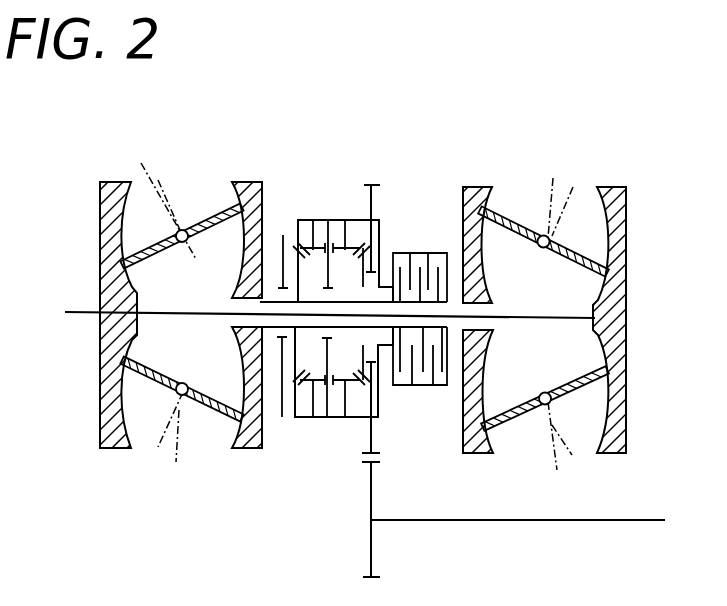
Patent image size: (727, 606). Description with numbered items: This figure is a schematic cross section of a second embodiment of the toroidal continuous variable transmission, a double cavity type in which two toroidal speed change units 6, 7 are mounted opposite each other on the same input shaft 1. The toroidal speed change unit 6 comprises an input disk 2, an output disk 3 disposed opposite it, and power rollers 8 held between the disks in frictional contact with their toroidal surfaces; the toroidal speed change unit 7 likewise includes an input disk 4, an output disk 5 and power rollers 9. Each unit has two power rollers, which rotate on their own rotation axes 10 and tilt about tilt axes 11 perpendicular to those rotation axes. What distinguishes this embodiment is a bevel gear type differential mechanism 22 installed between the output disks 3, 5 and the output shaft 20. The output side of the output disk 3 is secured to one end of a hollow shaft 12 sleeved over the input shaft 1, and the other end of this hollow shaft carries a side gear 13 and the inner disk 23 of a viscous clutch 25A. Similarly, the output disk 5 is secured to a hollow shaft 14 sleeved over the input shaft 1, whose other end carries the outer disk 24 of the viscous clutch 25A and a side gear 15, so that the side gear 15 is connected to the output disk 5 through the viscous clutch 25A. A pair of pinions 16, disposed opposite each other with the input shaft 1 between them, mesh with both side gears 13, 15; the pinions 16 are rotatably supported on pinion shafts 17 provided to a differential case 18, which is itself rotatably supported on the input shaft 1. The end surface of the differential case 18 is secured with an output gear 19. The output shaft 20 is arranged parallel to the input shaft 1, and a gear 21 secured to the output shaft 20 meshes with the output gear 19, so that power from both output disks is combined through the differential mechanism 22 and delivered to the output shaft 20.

The input shaft 1 is at (93, 312).
The input disk 2 is at (100, 220).
The output disk 3 is at (265, 198).
The input disk 4 is at (628, 232).
The output disk 5 is at (462, 190).
The toroidal speed change unit 6 is at (187, 170).
The toroidal speed change unit 7 is at (527, 168).
The power rollers 8 is at (212, 220).
The power rollers 9 is at (510, 223).
The rotation axes 10 is at (355, 321).
The tilt axes 11 is at (181, 243).
The hollow shaft 12 is at (378, 300).
The side gear 13 is at (283, 235).
The hollow shaft 14 is at (480, 282).
The side gear 15 is at (345, 222).
The pinions 16 is at (312, 212).
The pinion shafts 17 is at (333, 212).
The differential case 18 is at (317, 212).
The output gear 19 is at (377, 185).
The output shaft 20 is at (500, 523).
The gear 21 is at (368, 553).
The differential mechanism 22 is at (325, 212).
The inner disk 23 is at (425, 385).
The outer disk 24 is at (412, 265).
The viscous clutch 25A is at (411, 242).